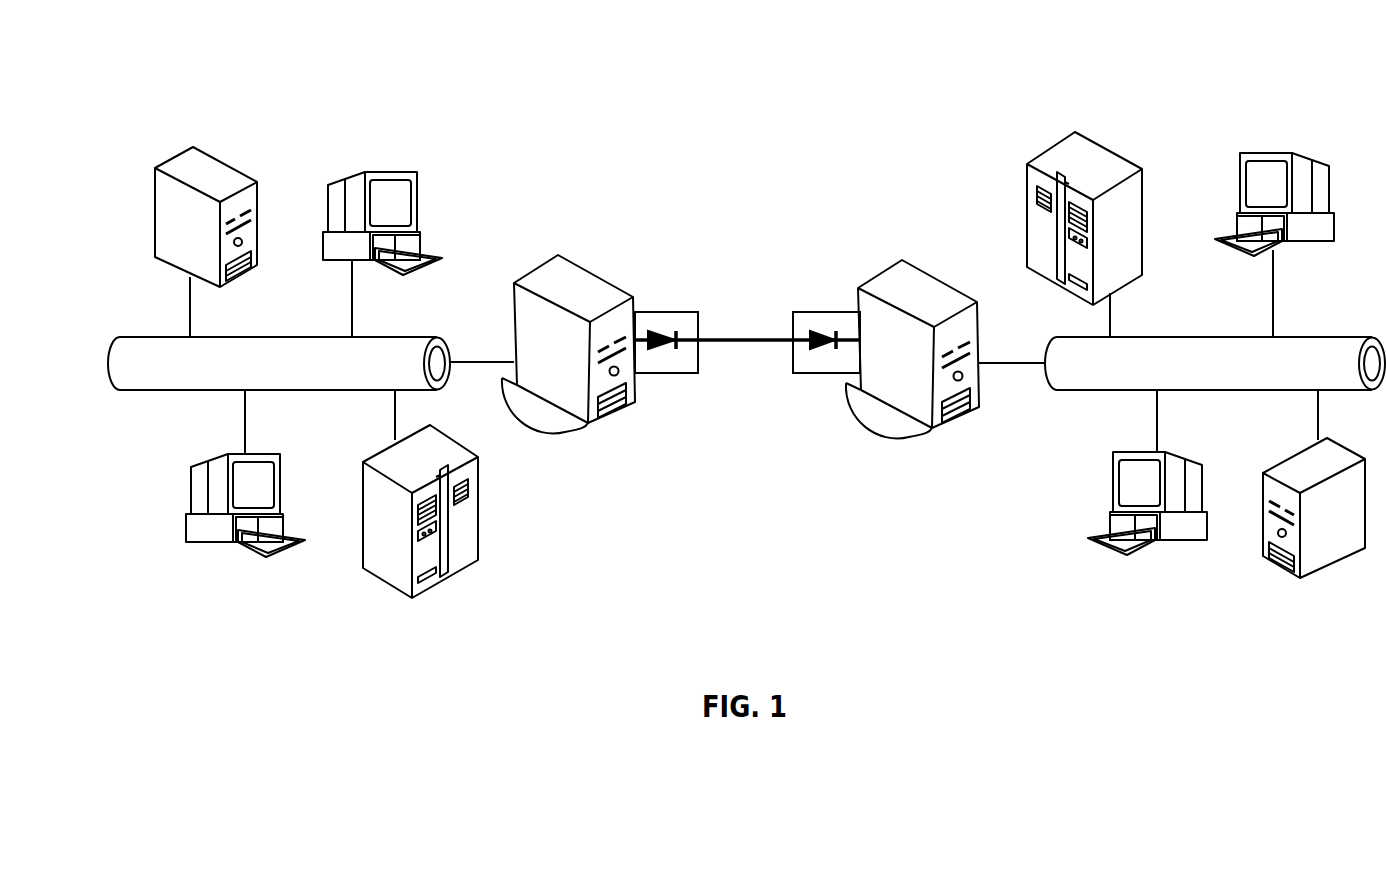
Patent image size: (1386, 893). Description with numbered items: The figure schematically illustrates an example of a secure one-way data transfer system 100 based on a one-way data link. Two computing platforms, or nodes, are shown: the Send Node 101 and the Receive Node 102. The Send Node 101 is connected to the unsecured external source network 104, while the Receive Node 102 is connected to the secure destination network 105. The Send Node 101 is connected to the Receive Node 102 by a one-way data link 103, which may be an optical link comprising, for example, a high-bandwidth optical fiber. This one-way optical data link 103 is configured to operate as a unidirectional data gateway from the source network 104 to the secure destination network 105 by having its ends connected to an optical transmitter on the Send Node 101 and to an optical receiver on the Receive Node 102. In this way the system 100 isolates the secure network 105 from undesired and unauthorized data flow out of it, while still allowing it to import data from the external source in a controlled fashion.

The one-way data transfer system 100 is at (247, 68).
The Send Node 101 is at (583, 278).
The Receive Node 102 is at (928, 283).
The one-way data link 103 is at (745, 343).
The source network 104 is at (365, 337).
The destination network 105 is at (1300, 337).